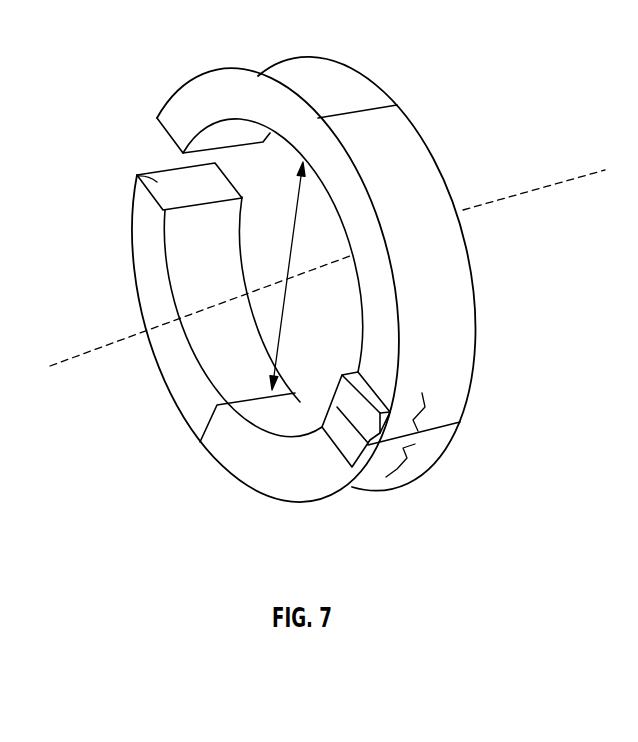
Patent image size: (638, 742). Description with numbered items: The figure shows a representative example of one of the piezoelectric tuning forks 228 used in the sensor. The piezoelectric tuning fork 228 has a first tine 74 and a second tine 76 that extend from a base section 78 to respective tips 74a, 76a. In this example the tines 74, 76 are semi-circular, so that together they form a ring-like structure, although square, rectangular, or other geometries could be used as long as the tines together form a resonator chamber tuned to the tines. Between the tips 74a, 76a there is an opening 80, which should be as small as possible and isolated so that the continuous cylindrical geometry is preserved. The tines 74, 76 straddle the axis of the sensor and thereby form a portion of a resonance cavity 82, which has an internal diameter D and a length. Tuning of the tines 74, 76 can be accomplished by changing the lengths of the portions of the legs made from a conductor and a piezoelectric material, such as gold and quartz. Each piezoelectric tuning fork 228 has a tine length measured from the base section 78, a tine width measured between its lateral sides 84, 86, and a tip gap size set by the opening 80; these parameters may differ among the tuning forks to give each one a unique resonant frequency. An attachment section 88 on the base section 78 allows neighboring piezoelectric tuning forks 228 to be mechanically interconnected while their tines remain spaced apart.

The first tine 74 is at (315, 73).
The tip of first tine 74a is at (161, 133).
The tip of second tine 76a is at (137, 176).
The opening 80 is at (167, 158).
The second tine 76 is at (150, 262).
The resonance cavity 82 is at (328, 318).
The lateral side 84 is at (478, 373).
The internal diameter D is at (295, 228).
The lateral side 86 is at (260, 473).
The attachment section 88 is at (348, 446).
The base section 78 is at (414, 435).
The piezoelectric tuning fork 228 is at (437, 461).